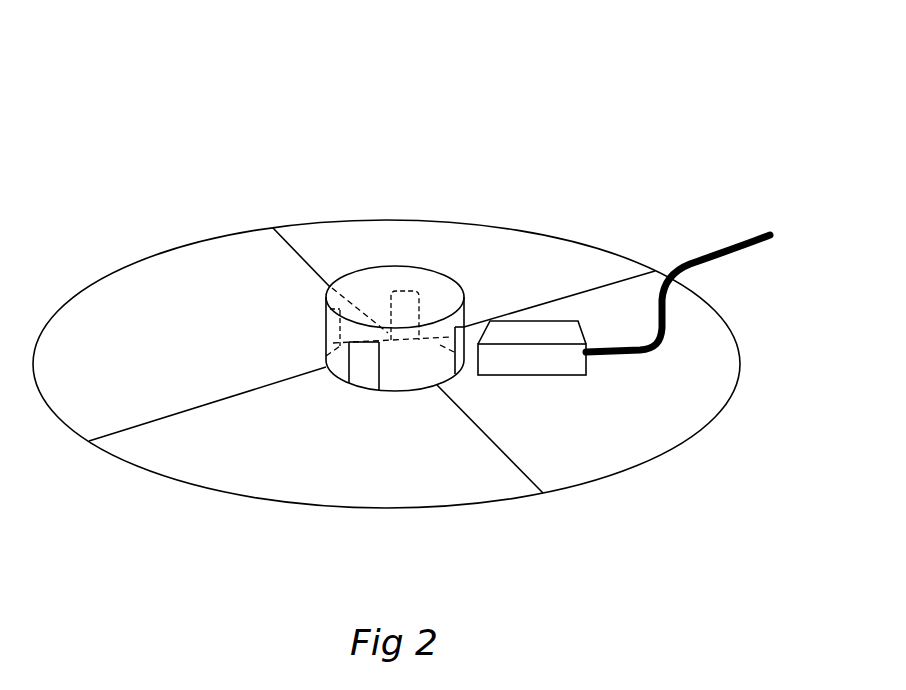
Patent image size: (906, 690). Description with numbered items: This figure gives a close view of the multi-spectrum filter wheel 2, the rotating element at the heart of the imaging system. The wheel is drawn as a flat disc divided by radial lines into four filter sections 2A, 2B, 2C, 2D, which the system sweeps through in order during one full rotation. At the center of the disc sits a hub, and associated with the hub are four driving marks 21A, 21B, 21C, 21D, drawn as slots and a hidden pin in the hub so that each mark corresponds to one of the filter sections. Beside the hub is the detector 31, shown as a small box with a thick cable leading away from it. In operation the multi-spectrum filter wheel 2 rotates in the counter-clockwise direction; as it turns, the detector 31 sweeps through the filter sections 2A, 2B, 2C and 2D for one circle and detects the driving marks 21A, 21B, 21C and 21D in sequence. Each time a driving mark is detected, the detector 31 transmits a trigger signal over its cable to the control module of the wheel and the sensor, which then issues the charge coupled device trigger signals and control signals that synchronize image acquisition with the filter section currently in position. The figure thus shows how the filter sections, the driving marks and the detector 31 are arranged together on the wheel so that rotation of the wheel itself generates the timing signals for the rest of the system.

The multi-spectrum filter wheel 2 is at (432, 223).
The filter section of the multi-spectrum filter wheel 2A is at (97, 340).
The filter section of the multi-spectrum filter wheel 2B is at (157, 455).
The filter section of the multi-spectrum filter wheel 2C is at (678, 417).
The filter section of the multi-spectrum filter wheel 2D is at (487, 250).
The driving mark 21A is at (338, 318).
The driving mark 21B is at (362, 364).
The driving mark 21C is at (462, 332).
The driving mark 21D is at (412, 305).
The detector 31 is at (557, 328).